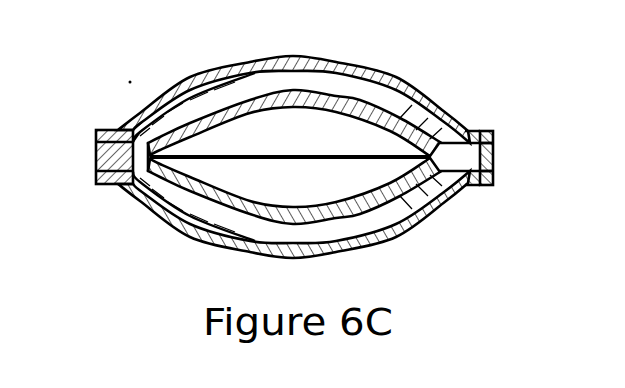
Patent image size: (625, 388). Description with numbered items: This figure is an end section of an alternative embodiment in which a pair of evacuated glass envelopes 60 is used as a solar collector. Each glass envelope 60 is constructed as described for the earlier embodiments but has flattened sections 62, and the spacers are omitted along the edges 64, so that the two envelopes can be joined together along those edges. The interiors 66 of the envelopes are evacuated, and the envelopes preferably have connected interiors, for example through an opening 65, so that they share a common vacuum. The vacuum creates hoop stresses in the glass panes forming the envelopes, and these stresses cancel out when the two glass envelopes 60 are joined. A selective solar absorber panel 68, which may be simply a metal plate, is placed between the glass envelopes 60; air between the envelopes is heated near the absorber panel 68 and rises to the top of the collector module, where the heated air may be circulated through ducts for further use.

The evacuated glass envelope 60 is at (400, 78).
The flattened section 62 is at (105, 183).
The edge 64 is at (96, 170).
The opening 65 is at (142, 127).
The interior 66 is at (235, 88).
The selective solar absorber panel 68 is at (333, 151).